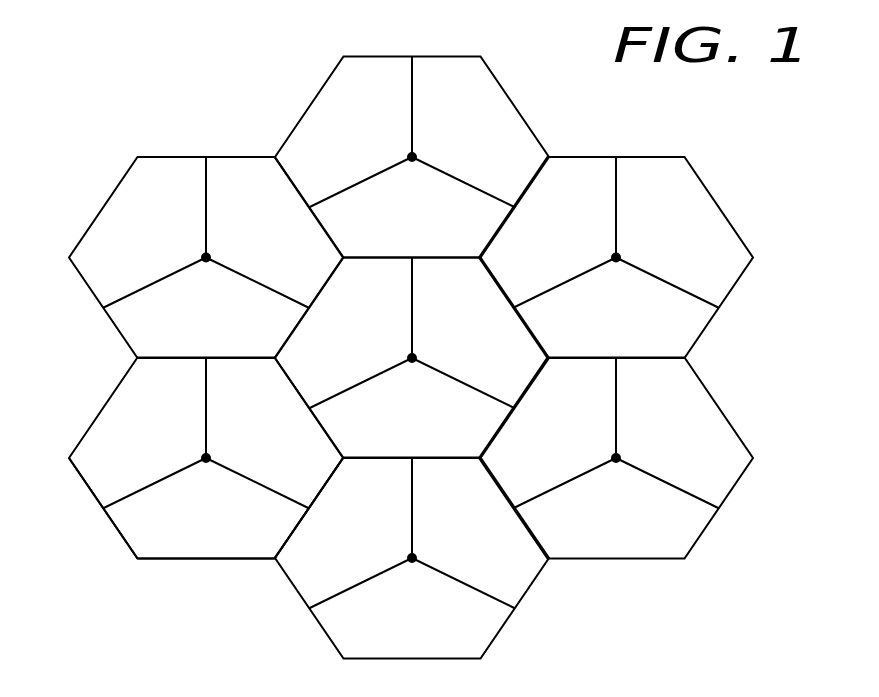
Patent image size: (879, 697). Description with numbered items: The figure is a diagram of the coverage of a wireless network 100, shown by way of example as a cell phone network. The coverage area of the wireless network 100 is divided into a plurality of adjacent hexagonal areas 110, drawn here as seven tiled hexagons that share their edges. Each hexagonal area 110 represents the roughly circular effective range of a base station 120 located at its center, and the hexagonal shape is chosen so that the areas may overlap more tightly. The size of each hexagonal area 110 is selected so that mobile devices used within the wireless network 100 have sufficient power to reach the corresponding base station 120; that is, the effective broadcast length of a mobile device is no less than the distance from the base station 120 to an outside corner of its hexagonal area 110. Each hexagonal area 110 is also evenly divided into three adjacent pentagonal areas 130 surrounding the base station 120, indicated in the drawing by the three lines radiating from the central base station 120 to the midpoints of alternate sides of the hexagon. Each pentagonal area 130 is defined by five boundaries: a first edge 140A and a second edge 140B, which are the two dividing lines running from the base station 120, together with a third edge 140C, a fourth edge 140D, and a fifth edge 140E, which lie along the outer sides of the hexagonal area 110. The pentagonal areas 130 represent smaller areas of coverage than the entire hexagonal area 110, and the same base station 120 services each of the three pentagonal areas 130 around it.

The wireless network 100 is at (392, 351).
The hexagonal area 110 is at (512, 100).
The base station 120 is at (412, 362).
The pentagonal area 130 is at (607, 550).
The first edge 140A is at (152, 478).
The second edge 140B is at (253, 478).
The third edge 140C is at (292, 533).
The fourth edge 140D is at (200, 558).
The fifth edge 140E is at (117, 532).